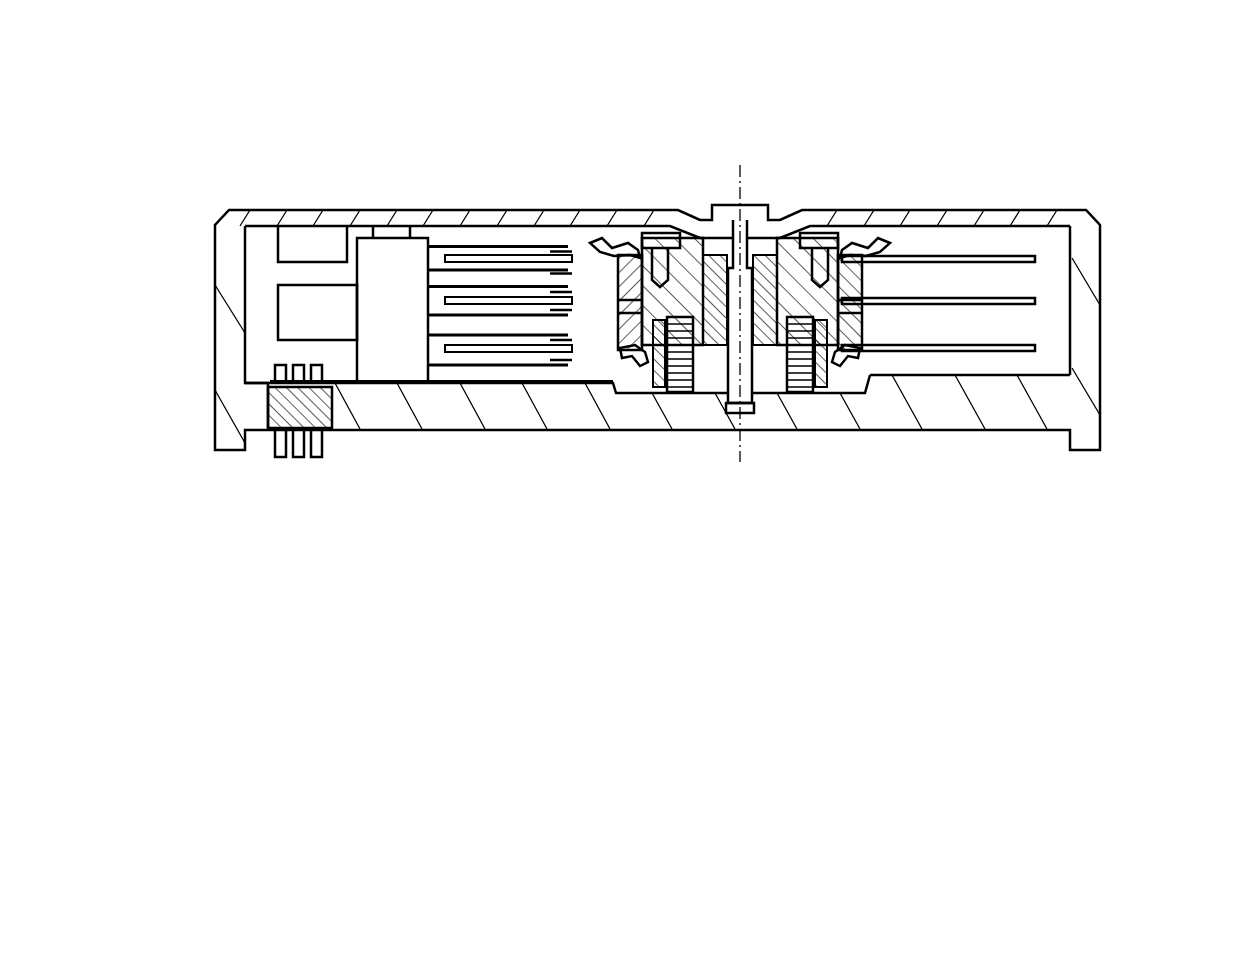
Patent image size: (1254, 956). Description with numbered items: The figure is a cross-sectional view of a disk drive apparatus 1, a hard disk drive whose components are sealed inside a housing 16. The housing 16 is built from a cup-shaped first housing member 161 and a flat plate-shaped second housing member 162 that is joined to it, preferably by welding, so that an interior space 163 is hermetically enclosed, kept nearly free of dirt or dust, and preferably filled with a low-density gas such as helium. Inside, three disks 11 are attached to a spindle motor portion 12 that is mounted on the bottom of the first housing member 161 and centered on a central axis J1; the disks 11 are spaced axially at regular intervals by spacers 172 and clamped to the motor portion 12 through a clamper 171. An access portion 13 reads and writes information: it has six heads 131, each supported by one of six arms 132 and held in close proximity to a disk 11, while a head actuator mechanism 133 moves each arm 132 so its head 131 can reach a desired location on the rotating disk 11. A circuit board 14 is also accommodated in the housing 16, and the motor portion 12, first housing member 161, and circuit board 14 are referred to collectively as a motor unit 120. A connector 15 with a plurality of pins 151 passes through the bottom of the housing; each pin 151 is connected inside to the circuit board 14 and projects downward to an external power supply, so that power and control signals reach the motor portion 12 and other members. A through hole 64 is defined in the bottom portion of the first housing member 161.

The disk drive apparatus 1 is at (207, 175).
The disks 11 is at (928, 257).
The motor portion 12 is at (793, 438).
The motor unit 120 is at (807, 556).
The access portion 13 is at (604, 538).
The heads 131 is at (557, 250).
The arms 132 is at (445, 242).
The head actuator mechanism 133 is at (400, 275).
The circuit board 14 is at (398, 384).
The connector 15 is at (322, 405).
The pins 151 is at (279, 457).
The housing 16 is at (1172, 178).
The first housing member 161 is at (1100, 297).
The second housing member 162 is at (1048, 210).
The interior space 163 is at (1060, 356).
The clamper 171 is at (640, 236).
The spacers 172 is at (838, 235).
The through hole 64 is at (268, 407).
The central axis J1 is at (732, 172).